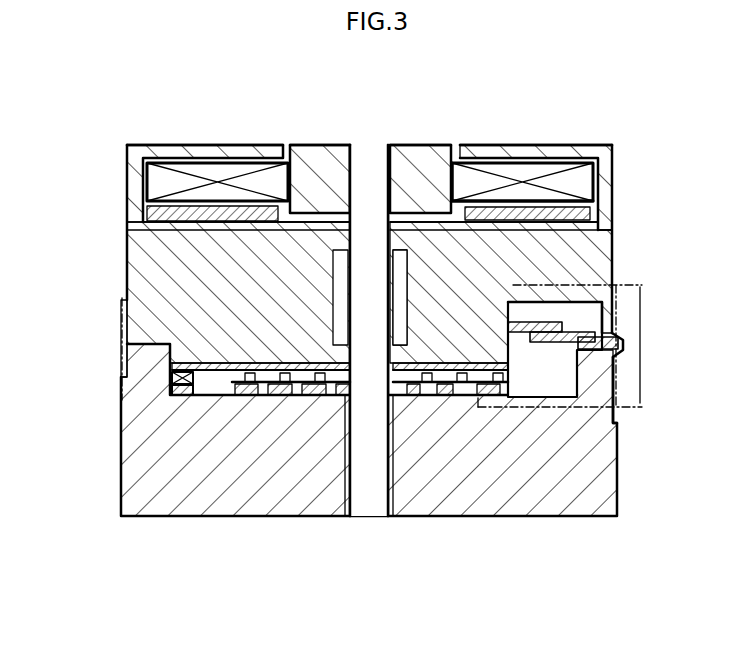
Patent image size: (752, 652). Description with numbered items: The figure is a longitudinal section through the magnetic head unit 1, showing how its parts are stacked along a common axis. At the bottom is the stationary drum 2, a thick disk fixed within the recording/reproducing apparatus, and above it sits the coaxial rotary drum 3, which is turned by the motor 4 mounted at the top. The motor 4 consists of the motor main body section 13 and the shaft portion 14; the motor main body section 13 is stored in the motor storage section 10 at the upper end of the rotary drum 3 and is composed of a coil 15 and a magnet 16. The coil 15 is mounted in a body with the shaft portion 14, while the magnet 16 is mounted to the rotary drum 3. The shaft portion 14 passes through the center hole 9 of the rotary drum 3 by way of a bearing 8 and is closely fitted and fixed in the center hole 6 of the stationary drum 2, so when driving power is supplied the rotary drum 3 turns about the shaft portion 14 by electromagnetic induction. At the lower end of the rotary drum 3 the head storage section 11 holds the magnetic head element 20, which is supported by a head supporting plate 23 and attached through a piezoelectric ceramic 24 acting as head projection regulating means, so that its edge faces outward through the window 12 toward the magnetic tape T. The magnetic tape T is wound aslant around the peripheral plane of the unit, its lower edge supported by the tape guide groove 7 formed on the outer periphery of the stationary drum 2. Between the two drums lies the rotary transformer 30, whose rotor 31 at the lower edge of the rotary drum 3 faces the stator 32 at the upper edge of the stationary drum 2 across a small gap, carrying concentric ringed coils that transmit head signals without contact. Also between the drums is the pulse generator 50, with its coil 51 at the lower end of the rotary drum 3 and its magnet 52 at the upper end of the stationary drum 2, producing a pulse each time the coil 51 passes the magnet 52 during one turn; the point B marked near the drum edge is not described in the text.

The magnetic head unit 1 is at (603, 102).
The stationary drum 2 is at (130, 492).
The rotary drum 3 is at (150, 290).
The motor 4 is at (351, 179).
The center hole 6 is at (387, 482).
The tape guide groove 7 is at (122, 369).
The bearing 8 is at (395, 243).
The center hole 9 is at (400, 290).
The motor storage section 10 is at (517, 166).
The head storage section 11 is at (608, 300).
The window 12 is at (618, 340).
The motor main body section 13 is at (372, 162).
The shaft portion 14 is at (360, 242).
The coil 15 is at (216, 178).
The magnet 16 is at (264, 212).
The magnetic head element 20 is at (598, 355).
The head supporting plate 23 is at (612, 324).
The piezoelectric ceramic 24 is at (540, 322).
The rotary transformer 30 is at (349, 497).
The rotor 31 is at (225, 400).
The stator 32 is at (265, 382).
The pulse generator 50 is at (180, 415).
The coil 51 is at (182, 378).
The magnet 52 is at (182, 390).
The magnetic tape T is at (120, 322).
The boundary point B is at (576, 412).